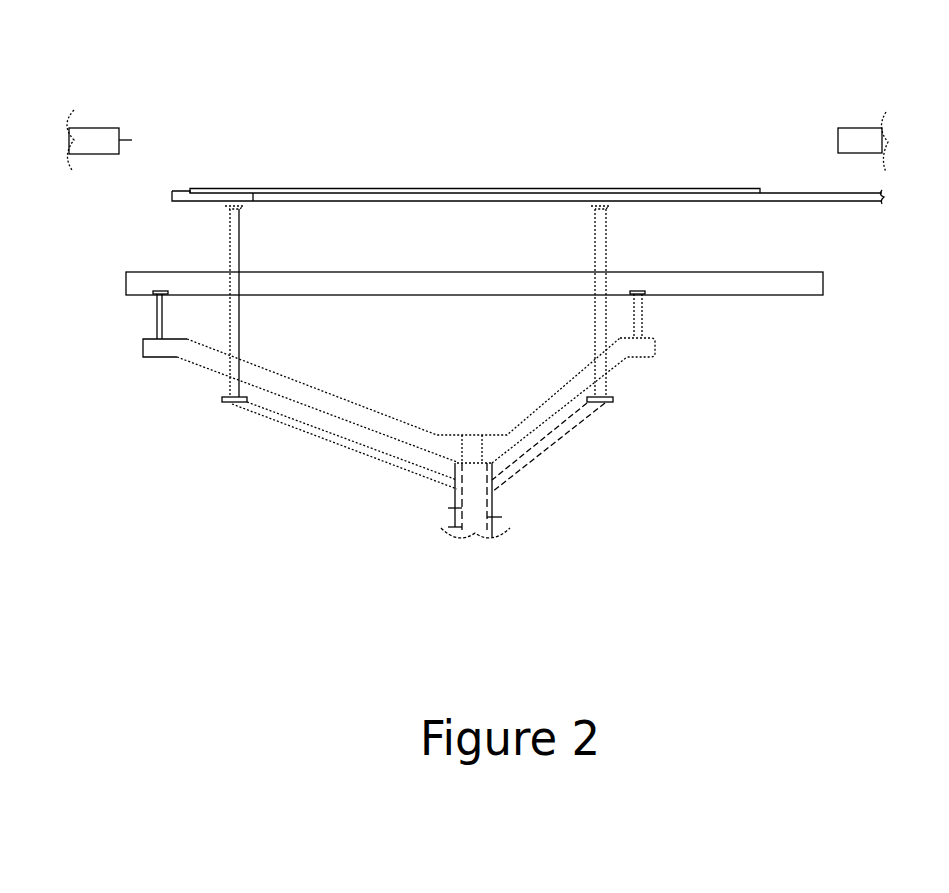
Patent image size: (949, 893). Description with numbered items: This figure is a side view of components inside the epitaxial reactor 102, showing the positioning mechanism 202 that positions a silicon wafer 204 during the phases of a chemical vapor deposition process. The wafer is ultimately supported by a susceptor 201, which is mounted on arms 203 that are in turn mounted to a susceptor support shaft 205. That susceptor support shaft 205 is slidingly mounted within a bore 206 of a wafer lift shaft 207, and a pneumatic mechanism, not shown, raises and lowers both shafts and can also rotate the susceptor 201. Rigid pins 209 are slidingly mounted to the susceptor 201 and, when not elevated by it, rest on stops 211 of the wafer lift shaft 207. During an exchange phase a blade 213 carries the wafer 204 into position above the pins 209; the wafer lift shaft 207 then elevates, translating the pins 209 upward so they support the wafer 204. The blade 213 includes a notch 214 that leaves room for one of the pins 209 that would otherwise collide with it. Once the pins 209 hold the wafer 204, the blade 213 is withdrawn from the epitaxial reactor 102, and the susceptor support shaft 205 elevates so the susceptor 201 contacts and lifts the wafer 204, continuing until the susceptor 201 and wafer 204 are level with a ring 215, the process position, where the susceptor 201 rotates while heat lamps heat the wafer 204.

The epitaxial reactor 102 is at (390, 127).
The susceptor 201 is at (782, 272).
The positioning mechanism 202 is at (568, 127).
The arms 203 is at (657, 347).
The silicon wafer 204 is at (635, 188).
The susceptor support shaft 205 is at (447, 505).
The bore 206 is at (477, 522).
The wafer lift shaft 207 is at (502, 517).
The rigid pins 209 is at (230, 245).
The stops 211 is at (223, 400).
The blade 213 is at (797, 193).
The notch 214 is at (243, 198).
The ring 215 is at (132, 140).